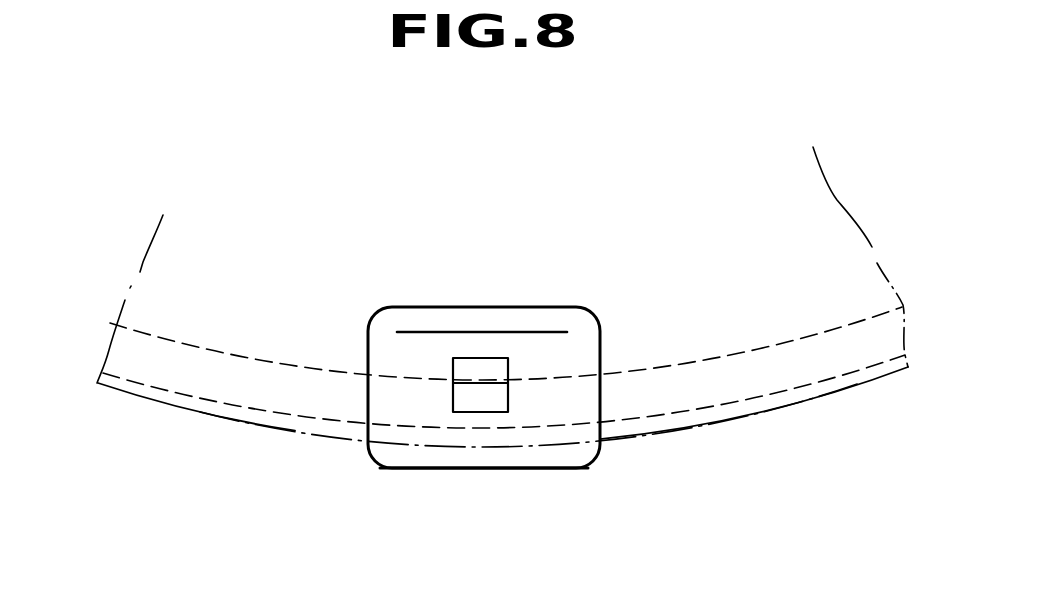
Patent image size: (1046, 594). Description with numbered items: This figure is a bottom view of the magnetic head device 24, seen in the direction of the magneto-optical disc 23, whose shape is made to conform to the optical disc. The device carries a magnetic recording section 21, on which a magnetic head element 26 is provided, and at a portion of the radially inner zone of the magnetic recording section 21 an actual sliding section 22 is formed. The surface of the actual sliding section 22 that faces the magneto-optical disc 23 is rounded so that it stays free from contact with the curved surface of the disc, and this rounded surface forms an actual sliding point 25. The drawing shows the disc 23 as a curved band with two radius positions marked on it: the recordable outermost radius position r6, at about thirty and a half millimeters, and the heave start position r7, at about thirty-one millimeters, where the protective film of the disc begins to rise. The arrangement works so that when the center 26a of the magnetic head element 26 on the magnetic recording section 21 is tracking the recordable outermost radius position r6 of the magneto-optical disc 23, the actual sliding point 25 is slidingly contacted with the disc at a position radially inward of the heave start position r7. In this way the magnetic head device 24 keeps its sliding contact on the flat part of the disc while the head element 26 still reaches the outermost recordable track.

The magnetic recording section 21 is at (573, 452).
The actual sliding section 22 is at (552, 308).
The magneto-optical disc 23 is at (817, 228).
The magnetic head device 24 is at (547, 472).
The actual sliding point 25 is at (457, 332).
The magnetic head element 26 is at (465, 403).
The center of magnetic head element 26a is at (483, 385).
The recordable outermost radius position r6 is at (489, 337).
The heave start position r7 is at (486, 384).